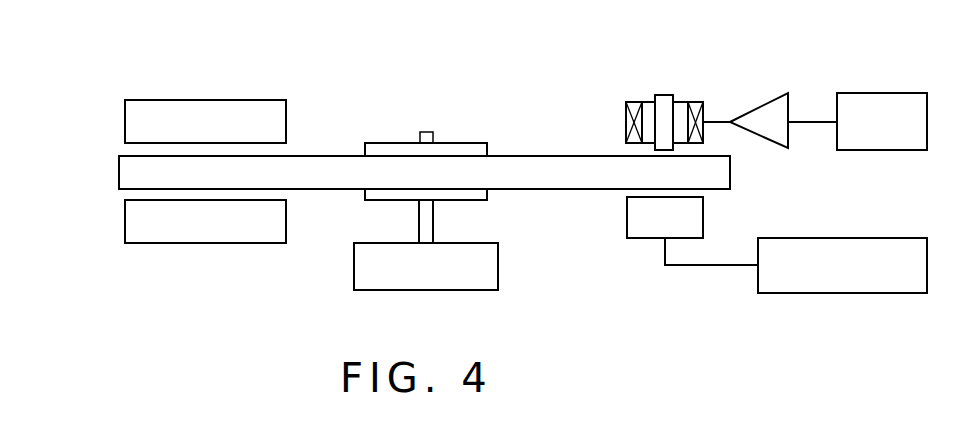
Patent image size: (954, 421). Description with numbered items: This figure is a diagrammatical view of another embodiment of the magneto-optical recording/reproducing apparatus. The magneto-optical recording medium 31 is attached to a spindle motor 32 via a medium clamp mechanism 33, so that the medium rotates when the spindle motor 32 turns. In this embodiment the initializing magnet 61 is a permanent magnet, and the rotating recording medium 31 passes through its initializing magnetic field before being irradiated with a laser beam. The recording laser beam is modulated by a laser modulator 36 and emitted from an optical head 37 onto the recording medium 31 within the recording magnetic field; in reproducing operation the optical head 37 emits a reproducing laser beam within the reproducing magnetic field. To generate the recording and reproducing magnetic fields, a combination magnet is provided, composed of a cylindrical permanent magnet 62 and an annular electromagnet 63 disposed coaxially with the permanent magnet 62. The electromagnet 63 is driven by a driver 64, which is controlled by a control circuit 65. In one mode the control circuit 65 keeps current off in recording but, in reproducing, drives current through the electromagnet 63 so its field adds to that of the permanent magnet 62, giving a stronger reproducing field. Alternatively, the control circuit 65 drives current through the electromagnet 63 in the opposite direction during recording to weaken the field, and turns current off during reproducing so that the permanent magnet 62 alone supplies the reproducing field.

The magneto-optical recording medium 31 is at (731, 170).
The spindle motor 32 is at (427, 292).
The medium clamp mechanism 33 is at (473, 143).
The laser modulator 36 is at (848, 295).
The optical head 37 is at (627, 215).
The initializing magnet 61 is at (205, 100).
The cylindrical permanent magnet 62 is at (662, 96).
The annular electromagnet 63 is at (626, 112).
The driver 64 is at (767, 103).
The control circuit 65 is at (887, 93).